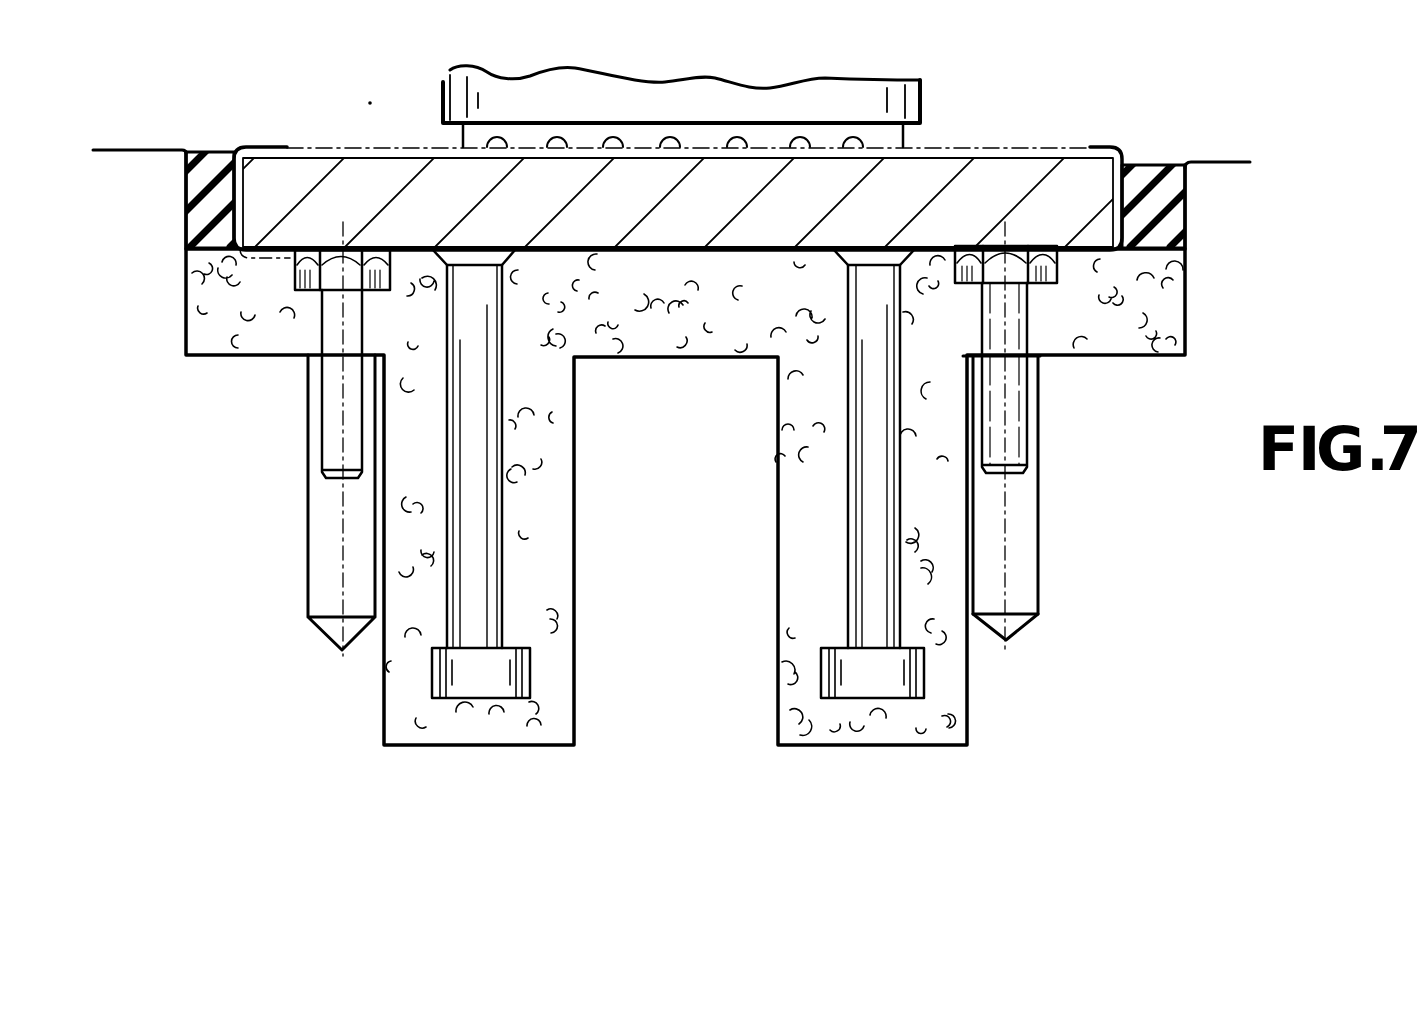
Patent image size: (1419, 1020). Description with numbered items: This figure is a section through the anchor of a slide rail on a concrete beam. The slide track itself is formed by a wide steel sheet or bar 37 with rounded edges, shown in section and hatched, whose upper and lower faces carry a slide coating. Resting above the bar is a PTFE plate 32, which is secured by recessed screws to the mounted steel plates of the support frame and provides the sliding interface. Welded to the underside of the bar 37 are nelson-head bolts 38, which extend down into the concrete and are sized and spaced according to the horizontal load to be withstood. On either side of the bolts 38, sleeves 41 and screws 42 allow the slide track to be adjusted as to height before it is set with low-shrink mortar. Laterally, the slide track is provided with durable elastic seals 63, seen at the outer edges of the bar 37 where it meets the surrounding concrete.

The PTFE plate 32 is at (890, 137).
The wide steel sheet or bar 37 is at (1045, 197).
The nelson-head bolt 38 is at (476, 486).
The sleeve 41 is at (1023, 580).
The screw 42 is at (1015, 422).
The durable elastic seal 63 is at (208, 155).